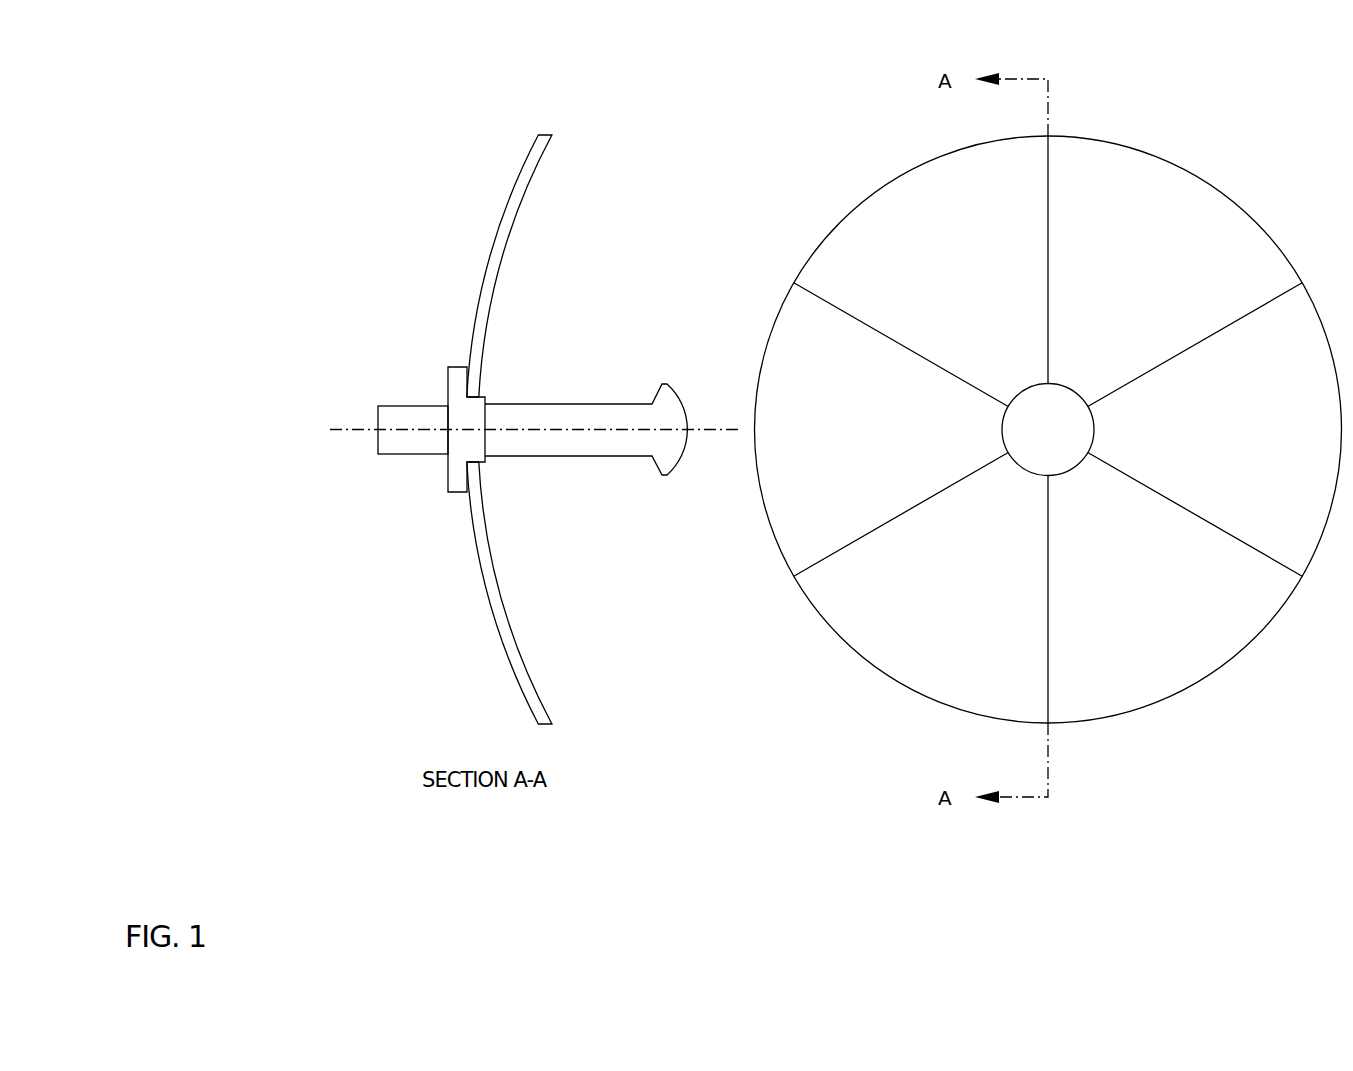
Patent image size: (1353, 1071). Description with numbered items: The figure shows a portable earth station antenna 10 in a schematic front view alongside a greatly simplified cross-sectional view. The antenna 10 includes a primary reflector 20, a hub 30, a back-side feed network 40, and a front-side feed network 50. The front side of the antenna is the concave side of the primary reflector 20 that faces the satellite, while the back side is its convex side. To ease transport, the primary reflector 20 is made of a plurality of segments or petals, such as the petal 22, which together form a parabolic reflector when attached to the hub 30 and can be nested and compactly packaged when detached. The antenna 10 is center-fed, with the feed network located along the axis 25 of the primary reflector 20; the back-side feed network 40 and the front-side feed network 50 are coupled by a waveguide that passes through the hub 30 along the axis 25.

The portable earth station antenna 10 is at (841, 53).
The primary reflector 20 is at (497, 222).
The petal 22 is at (866, 197).
The axis 25 is at (350, 428).
The hub 30 is at (448, 367).
The back-side feed network 40 is at (403, 455).
The front-side feed network 50 is at (573, 457).